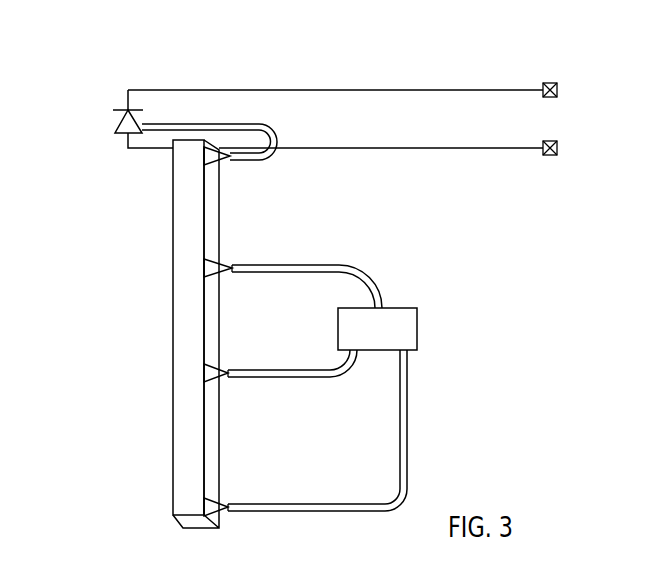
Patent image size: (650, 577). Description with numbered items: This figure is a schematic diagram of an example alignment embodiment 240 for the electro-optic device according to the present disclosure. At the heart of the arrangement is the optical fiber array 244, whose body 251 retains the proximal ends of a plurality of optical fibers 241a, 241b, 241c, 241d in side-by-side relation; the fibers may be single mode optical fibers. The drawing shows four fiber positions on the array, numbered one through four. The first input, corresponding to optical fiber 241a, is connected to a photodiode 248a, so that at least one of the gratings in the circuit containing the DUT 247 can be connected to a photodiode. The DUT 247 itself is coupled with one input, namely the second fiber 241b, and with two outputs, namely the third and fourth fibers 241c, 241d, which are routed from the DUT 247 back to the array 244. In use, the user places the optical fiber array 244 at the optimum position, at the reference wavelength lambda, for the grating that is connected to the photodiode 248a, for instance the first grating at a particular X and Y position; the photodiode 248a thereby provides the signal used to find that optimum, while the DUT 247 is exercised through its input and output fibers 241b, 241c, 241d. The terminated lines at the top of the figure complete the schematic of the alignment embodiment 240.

The alignment embodiment 240 is at (500, 67).
The optical fiber array 244 is at (173, 230).
The DUT 247 is at (407, 312).
The photodiode 248a is at (115, 128).
The body 251 is at (205, 208).
The optical fiber 241a is at (216, 150).
The optical fiber 241b is at (215, 272).
The optical fiber 241c is at (215, 379).
The optical fiber 241d is at (215, 506).